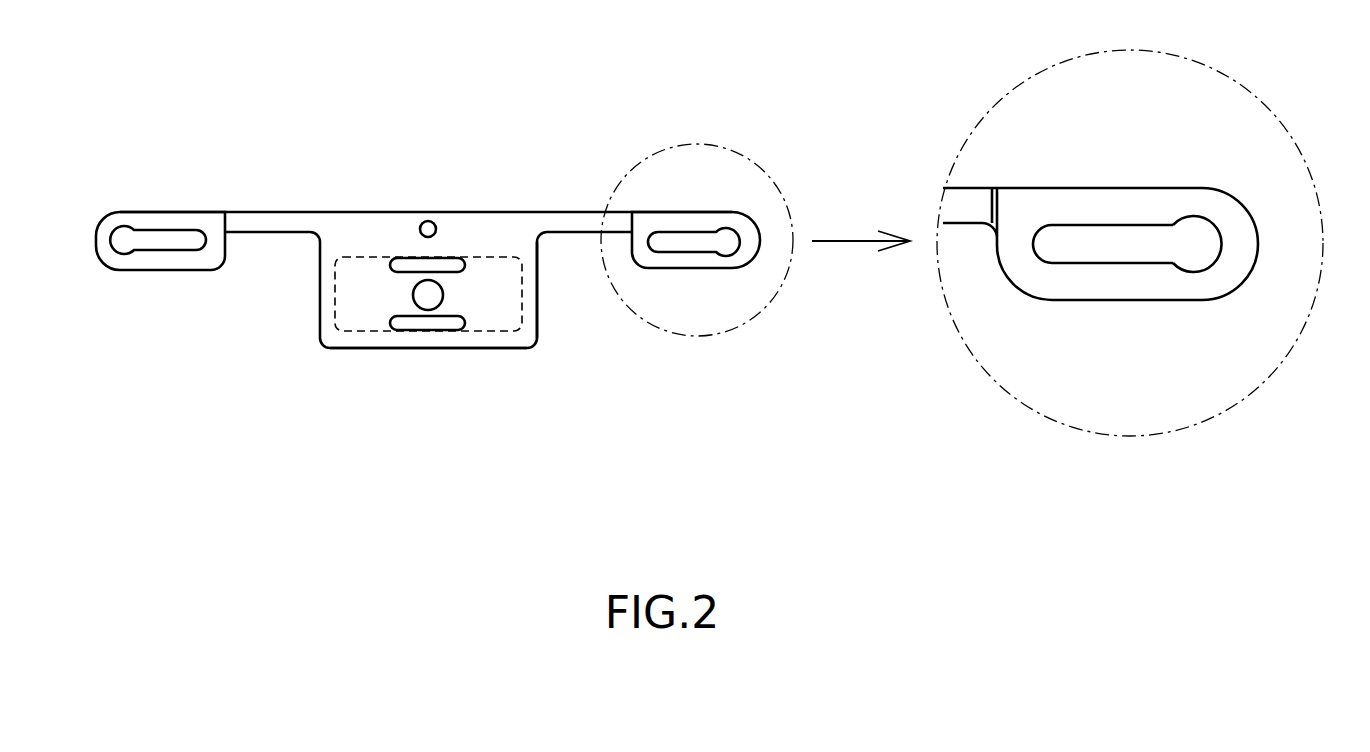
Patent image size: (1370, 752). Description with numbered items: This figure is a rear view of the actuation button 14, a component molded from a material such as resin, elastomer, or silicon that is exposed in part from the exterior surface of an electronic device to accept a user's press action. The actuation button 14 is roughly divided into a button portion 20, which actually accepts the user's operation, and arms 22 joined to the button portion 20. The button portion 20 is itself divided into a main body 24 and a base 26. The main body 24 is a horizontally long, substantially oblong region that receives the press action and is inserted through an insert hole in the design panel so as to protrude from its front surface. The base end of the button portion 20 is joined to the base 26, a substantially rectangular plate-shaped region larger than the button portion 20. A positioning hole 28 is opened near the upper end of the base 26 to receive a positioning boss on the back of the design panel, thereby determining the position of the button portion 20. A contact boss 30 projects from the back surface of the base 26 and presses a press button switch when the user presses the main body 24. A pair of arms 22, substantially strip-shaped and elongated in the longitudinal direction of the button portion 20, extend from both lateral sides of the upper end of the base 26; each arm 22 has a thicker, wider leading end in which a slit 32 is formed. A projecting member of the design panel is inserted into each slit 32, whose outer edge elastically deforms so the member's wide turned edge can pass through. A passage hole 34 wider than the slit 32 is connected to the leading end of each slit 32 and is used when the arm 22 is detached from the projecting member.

The actuation button 14 is at (428, 136).
The button portion 20 is at (434, 357).
The arms 22 is at (226, 197).
The main body 24 is at (543, 313).
The base 26 is at (325, 346).
The positioning hole 28 is at (440, 213).
The contact boss 30 is at (430, 298).
The slit 32 is at (1090, 237).
The passage hole 34 is at (1196, 232).